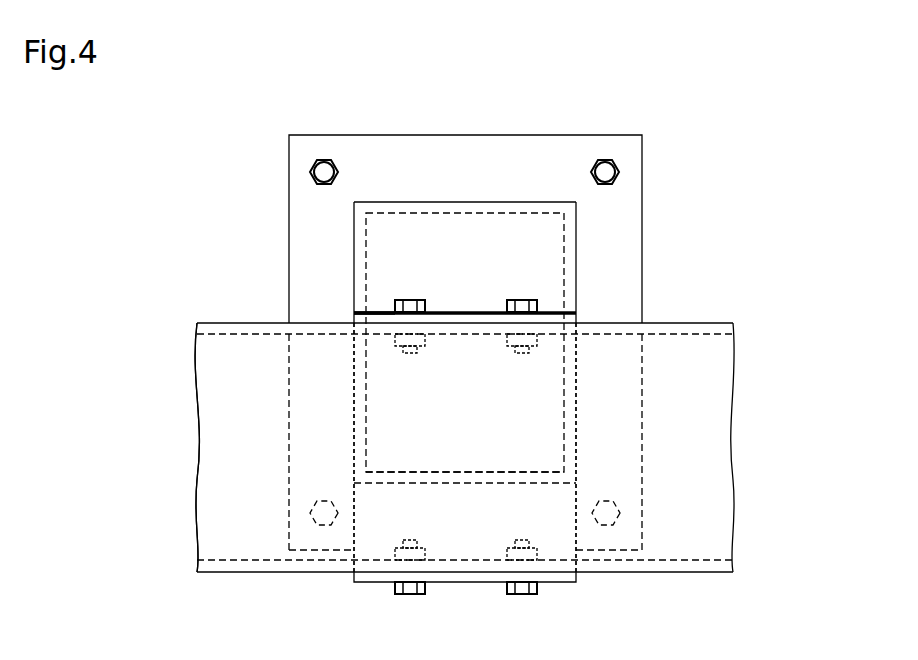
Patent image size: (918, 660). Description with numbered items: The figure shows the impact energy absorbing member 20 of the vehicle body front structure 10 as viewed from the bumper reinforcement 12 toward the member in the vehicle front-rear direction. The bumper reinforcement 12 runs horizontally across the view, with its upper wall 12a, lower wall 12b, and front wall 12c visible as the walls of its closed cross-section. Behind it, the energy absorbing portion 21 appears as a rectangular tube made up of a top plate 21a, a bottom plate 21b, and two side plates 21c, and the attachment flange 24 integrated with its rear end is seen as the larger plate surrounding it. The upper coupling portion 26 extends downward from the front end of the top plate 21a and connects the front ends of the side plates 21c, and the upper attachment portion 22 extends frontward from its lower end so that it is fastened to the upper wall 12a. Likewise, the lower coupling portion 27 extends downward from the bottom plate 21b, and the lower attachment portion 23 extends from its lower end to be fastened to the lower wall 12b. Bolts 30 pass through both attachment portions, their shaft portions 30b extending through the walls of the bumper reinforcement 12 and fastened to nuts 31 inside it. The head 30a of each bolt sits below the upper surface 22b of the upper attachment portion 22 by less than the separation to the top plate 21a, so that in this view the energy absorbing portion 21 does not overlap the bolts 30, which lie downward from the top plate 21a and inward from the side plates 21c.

The vehicle body front structure 10 is at (749, 321).
The bumper reinforcement 12 is at (698, 322).
The upper wall 12a is at (225, 322).
The lower wall 12b is at (228, 573).
The front wall 12c is at (212, 405).
The impact energy absorbing member 20 is at (583, 243).
The energy absorbing portion 21 is at (513, 202).
The top plate 21a is at (428, 202).
The bottom plate 21b is at (462, 472).
The side plates 21c is at (352, 358).
The upper attachment portion 22 is at (460, 312).
The upper surface 22b is at (380, 311).
The lower attachment portion 23 is at (553, 583).
The attachment flange 24 is at (641, 178).
The upper coupling portion 26 is at (542, 279).
The lower coupling portion 27 is at (560, 532).
The bolts 30 is at (403, 300).
The head 30a is at (412, 300).
The shaft portions 30b is at (408, 352).
The nuts 31 is at (428, 340).